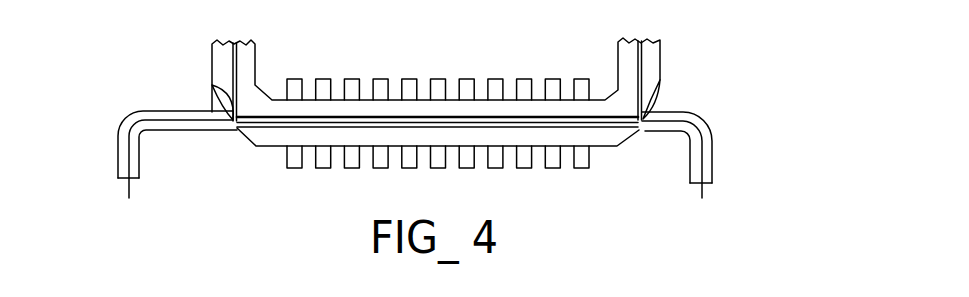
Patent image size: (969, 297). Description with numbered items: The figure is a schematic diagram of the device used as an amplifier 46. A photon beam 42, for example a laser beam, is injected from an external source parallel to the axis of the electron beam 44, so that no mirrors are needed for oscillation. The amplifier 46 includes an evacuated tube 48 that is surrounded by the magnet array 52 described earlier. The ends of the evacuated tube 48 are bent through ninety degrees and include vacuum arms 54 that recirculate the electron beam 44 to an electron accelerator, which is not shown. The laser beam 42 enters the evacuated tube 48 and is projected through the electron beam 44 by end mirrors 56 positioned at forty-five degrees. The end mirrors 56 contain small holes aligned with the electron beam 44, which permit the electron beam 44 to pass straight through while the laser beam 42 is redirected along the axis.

The photon beam 42 is at (237, 57).
The electron beam 44 is at (136, 176).
The amplifier 46 is at (393, 171).
The evacuated tube 48 is at (482, 152).
The magnet array 52 is at (581, 172).
The vacuum arms 54 is at (712, 155).
The end mirrors 56 is at (212, 86).